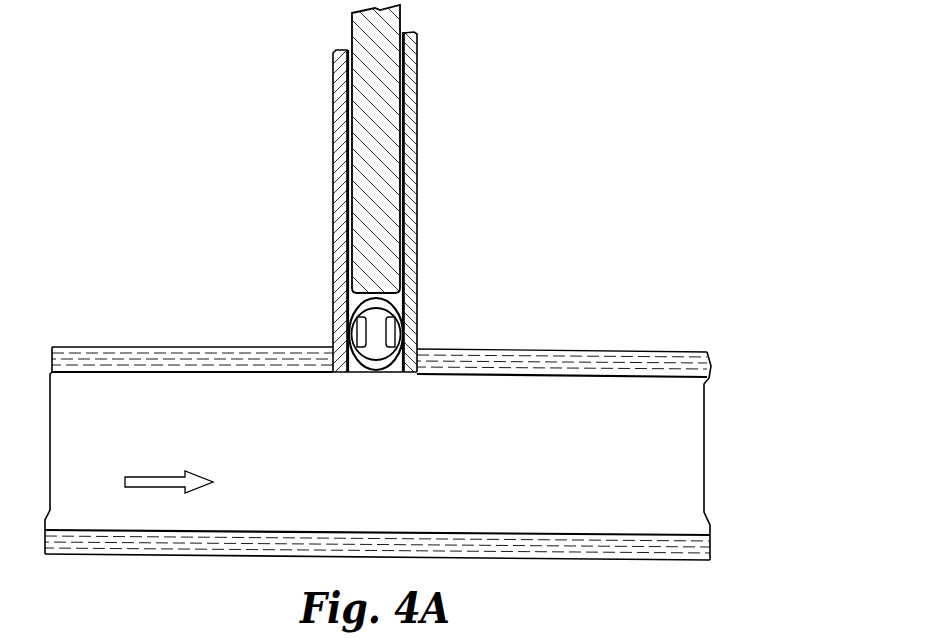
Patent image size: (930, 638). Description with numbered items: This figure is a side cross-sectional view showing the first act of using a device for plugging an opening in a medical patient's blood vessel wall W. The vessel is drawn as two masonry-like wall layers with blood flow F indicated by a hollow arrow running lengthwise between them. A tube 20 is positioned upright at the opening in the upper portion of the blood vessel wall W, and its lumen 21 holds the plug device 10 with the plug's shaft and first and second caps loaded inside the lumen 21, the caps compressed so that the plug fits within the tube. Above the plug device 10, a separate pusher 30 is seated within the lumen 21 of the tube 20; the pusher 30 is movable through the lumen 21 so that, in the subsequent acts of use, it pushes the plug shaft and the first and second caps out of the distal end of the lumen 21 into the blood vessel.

The plug device 10 is at (390, 360).
The tube 20 is at (417, 97).
The lumen 21 is at (405, 294).
The pusher 30 is at (385, 161).
The blood vessel wall W is at (583, 349).
The blood flow F is at (150, 490).